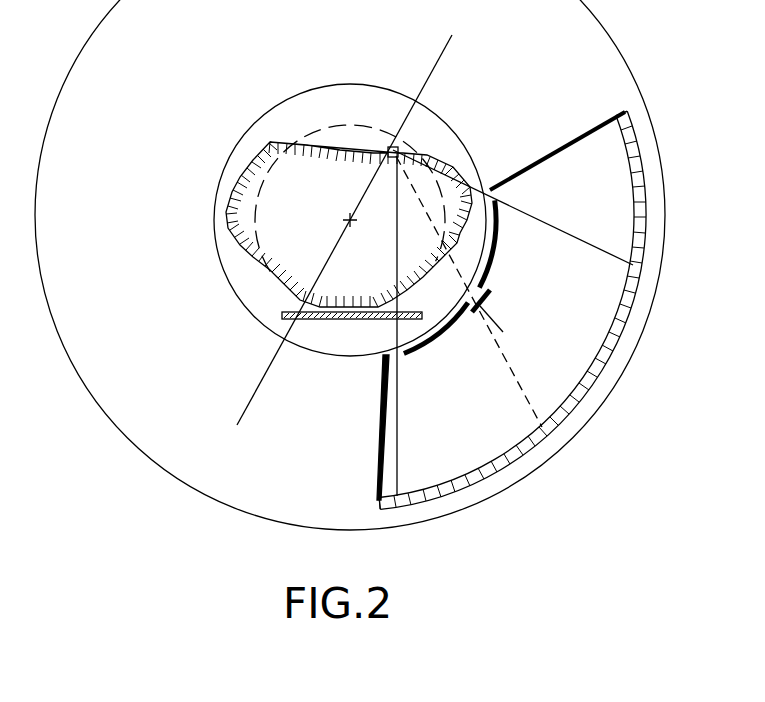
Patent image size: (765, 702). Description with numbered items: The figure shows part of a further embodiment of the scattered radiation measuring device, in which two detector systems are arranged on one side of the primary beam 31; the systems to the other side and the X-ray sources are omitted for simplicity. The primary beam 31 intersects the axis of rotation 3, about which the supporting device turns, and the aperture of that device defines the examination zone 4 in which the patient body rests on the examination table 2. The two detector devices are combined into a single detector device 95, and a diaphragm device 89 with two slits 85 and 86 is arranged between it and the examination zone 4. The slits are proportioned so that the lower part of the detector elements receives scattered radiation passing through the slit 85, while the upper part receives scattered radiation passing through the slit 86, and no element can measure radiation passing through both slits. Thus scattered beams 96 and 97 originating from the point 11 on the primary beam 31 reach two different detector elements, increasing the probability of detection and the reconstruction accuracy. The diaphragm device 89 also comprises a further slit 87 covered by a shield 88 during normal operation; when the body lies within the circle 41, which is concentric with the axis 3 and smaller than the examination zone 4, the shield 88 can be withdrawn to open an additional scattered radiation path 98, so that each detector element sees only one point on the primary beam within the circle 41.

The examination table 2 is at (307, 320).
The axis of rotation 3 is at (353, 222).
The examination zone 4 is at (375, 86).
The point on the primary beam 11 is at (395, 144).
The primary beam 31 is at (432, 80).
The circle 41 is at (313, 130).
The slit 85 is at (382, 358).
The slit 86 is at (490, 189).
The further slit 87 is at (487, 286).
The shield 88 is at (506, 327).
The diaphragm device 89 is at (557, 155).
The detector device 95 is at (577, 418).
The scattered beam 96 is at (400, 463).
The scattered beam 97 is at (577, 238).
The ray line 98 is at (516, 380).